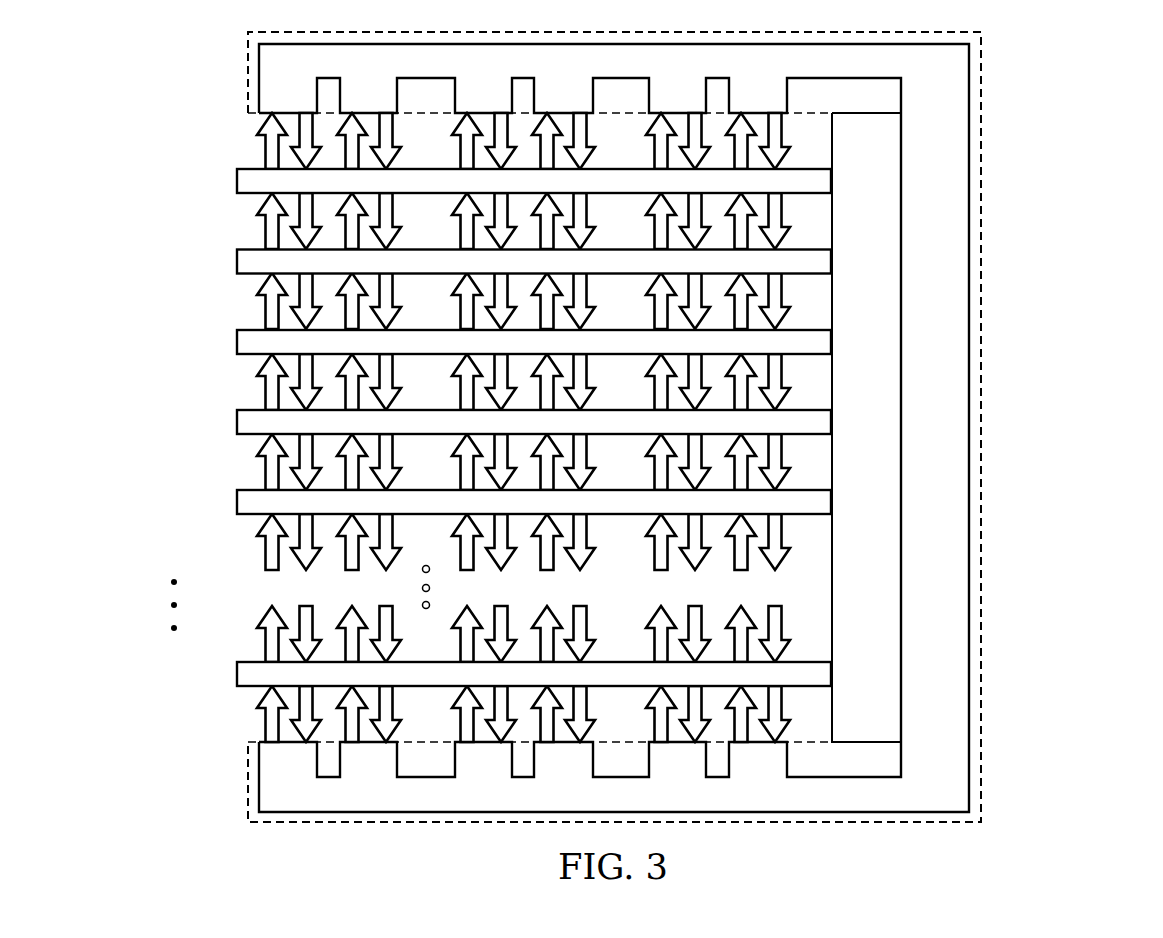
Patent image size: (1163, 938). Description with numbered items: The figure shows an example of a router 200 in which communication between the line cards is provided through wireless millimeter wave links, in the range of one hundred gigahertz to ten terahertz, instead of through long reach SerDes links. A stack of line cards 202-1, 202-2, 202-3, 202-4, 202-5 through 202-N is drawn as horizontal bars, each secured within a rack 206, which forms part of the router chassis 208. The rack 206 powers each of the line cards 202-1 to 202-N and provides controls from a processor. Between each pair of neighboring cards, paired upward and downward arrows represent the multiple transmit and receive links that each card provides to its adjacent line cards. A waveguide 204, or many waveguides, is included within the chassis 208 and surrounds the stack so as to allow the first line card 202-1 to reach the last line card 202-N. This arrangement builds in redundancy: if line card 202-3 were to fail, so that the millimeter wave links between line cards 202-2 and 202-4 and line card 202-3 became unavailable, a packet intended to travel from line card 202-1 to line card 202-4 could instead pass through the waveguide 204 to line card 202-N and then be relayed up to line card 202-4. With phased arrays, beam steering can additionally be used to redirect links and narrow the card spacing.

The router 200 is at (158, 103).
The first line card 202-1 is at (237, 178).
The line card 202-2 is at (237, 259).
The line card 202-3 is at (237, 340).
The line card 202-4 is at (237, 420).
The line card 202-5 is at (237, 500).
The last line card 202-N is at (238, 673).
The waveguide 204 is at (1045, 222).
The rack 206 is at (887, 405).
The router chassis 208 is at (982, 78).